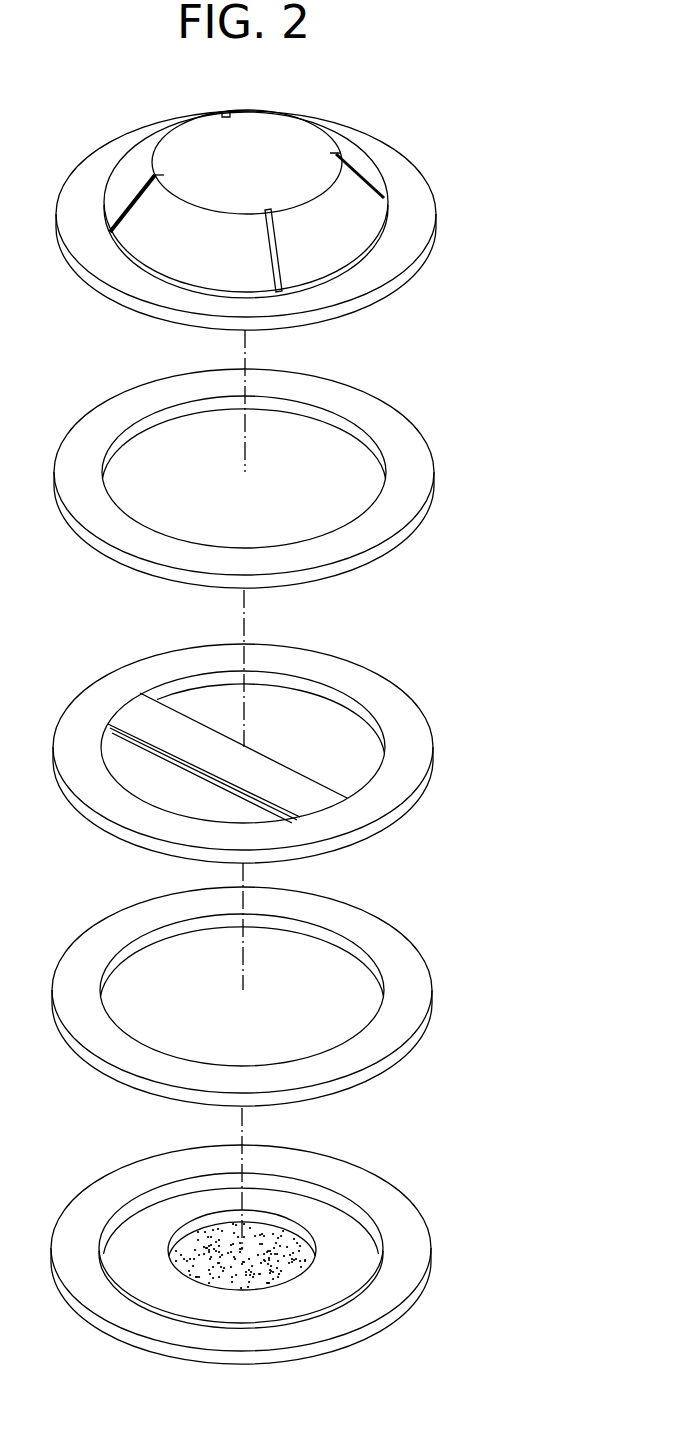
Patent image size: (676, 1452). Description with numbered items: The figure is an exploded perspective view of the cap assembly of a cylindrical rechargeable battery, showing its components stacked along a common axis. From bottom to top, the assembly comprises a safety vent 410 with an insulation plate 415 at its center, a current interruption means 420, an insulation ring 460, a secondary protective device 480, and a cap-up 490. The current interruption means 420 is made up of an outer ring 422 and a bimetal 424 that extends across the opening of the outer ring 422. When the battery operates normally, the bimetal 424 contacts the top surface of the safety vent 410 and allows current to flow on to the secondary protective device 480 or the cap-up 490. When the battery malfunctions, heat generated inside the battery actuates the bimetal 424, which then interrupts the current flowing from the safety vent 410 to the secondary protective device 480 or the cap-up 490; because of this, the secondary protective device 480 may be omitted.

The safety vent 410 is at (321, 1249).
The insulation plate 415 is at (313, 1237).
The current interruption means 420 is at (322, 749).
The outer ring 422 is at (413, 753).
The bimetal 424 is at (313, 797).
The insulation ring 460 is at (413, 992).
The secondary protective device 480 is at (425, 470).
The cap-up 490 is at (425, 208).